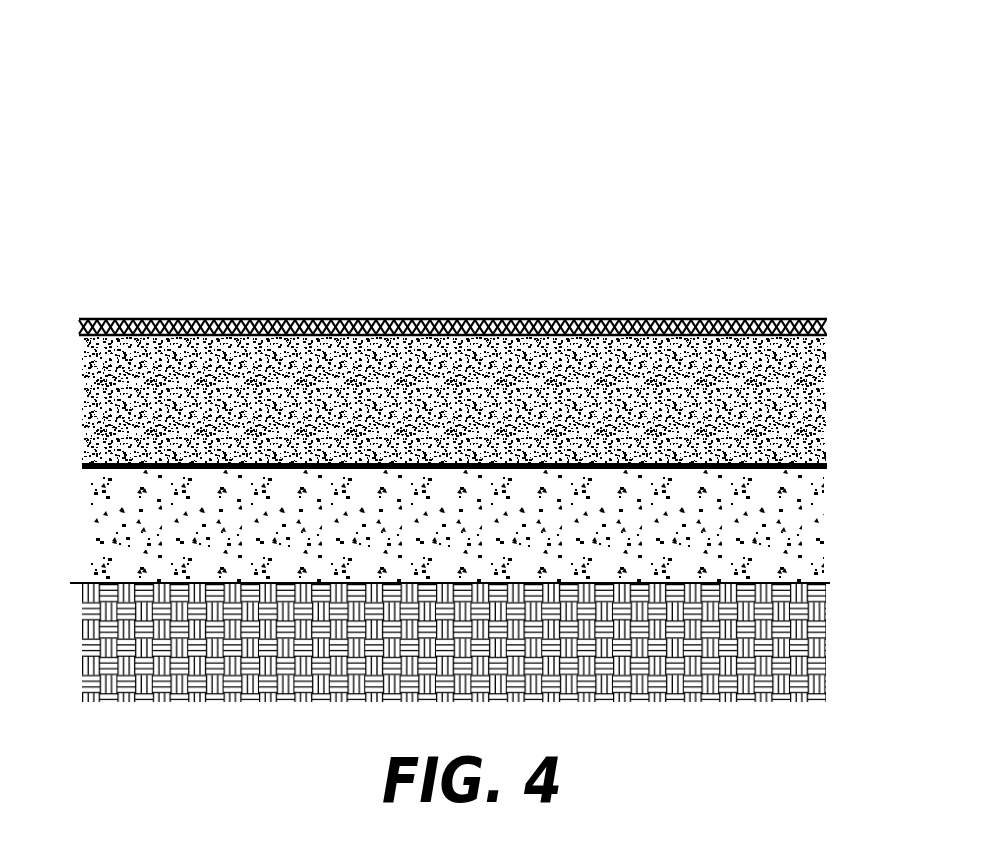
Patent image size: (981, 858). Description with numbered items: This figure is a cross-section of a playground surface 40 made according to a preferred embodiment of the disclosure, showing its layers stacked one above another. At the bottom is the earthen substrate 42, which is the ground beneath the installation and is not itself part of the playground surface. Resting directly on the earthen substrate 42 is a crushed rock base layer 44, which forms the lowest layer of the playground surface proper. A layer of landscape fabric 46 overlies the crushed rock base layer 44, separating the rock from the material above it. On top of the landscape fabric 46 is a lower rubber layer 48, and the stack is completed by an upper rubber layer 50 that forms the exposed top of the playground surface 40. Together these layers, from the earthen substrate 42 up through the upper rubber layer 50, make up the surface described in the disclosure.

The playground surface 40 is at (476, 379).
The earthen substrate 42 is at (456, 655).
The crushed rock base layer 44 is at (456, 535).
The landscape fabric 46 is at (828, 463).
The lower rubber layer 48 is at (456, 407).
The upper rubber layer 50 is at (491, 318).